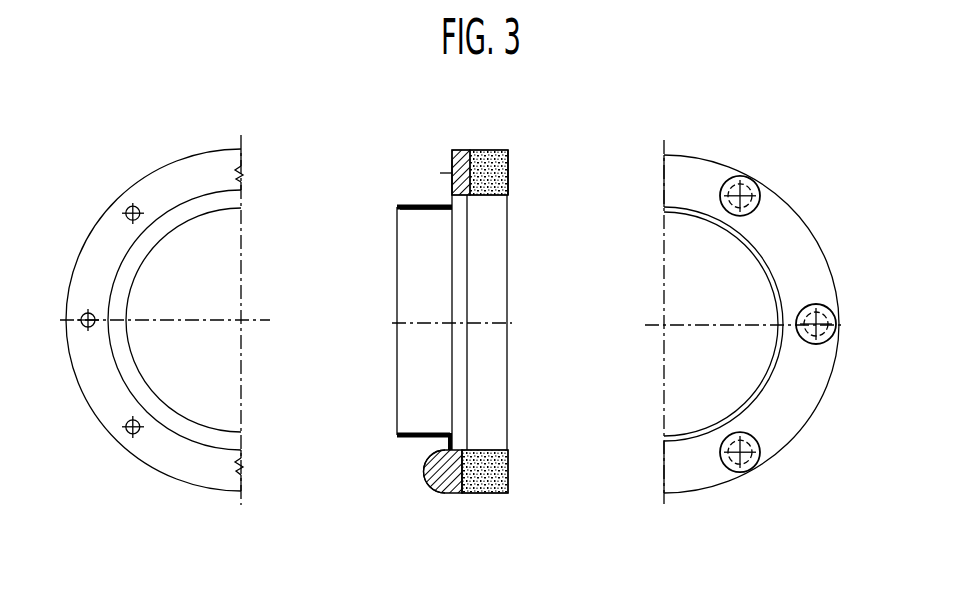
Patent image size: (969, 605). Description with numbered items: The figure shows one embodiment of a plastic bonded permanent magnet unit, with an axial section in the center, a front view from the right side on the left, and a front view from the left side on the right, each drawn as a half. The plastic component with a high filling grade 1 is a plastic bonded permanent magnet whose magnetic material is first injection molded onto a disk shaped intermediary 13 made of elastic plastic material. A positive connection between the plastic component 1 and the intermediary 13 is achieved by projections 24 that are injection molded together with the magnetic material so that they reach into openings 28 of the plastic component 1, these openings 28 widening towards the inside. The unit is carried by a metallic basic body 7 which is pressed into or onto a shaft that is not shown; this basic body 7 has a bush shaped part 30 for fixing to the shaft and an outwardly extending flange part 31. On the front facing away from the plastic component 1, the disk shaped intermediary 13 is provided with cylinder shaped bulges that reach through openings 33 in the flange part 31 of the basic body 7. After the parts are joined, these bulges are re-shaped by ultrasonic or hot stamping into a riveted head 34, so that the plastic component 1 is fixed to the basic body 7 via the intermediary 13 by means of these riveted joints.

The plastic component with a high filling grade 1 is at (192, 178).
The basic body 7 is at (182, 228).
The disk shaped intermediary 13 is at (459, 494).
The projection 24 is at (128, 208).
The opening 28 is at (508, 185).
The bush shaped part 30 is at (425, 210).
The flange part 31 is at (451, 157).
The opening 33 is at (443, 491).
The riveted head 34 is at (434, 478).